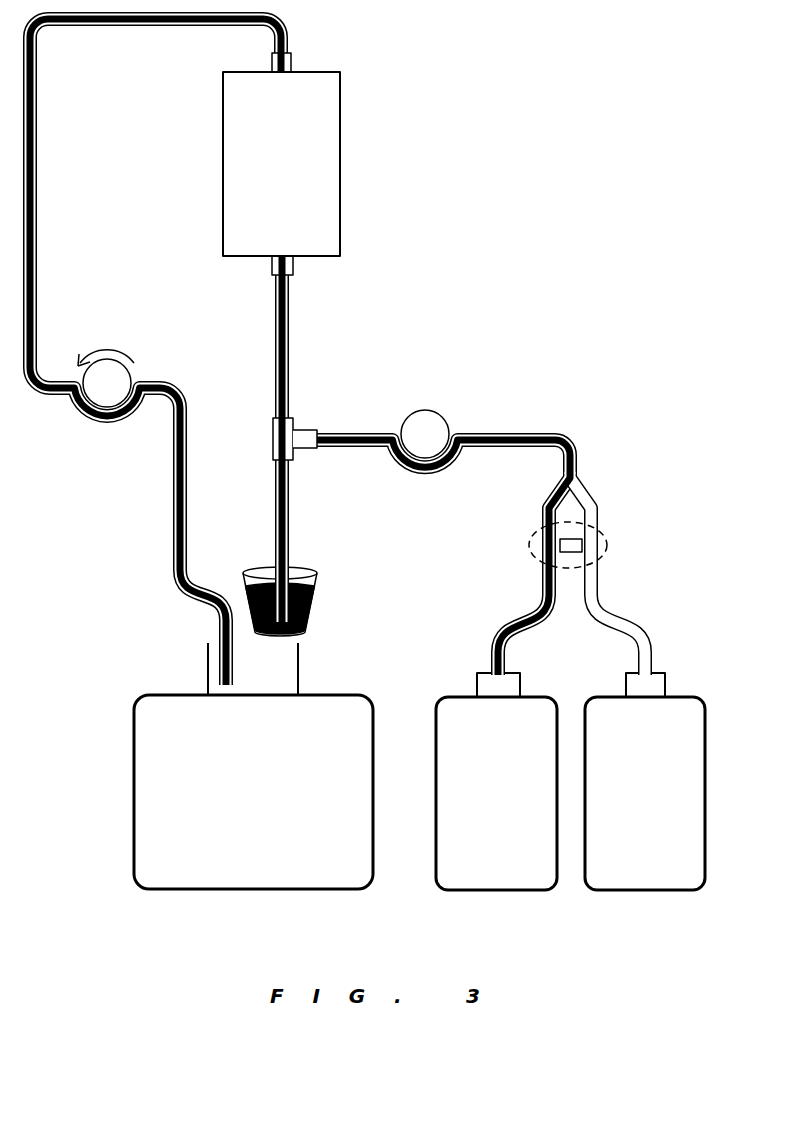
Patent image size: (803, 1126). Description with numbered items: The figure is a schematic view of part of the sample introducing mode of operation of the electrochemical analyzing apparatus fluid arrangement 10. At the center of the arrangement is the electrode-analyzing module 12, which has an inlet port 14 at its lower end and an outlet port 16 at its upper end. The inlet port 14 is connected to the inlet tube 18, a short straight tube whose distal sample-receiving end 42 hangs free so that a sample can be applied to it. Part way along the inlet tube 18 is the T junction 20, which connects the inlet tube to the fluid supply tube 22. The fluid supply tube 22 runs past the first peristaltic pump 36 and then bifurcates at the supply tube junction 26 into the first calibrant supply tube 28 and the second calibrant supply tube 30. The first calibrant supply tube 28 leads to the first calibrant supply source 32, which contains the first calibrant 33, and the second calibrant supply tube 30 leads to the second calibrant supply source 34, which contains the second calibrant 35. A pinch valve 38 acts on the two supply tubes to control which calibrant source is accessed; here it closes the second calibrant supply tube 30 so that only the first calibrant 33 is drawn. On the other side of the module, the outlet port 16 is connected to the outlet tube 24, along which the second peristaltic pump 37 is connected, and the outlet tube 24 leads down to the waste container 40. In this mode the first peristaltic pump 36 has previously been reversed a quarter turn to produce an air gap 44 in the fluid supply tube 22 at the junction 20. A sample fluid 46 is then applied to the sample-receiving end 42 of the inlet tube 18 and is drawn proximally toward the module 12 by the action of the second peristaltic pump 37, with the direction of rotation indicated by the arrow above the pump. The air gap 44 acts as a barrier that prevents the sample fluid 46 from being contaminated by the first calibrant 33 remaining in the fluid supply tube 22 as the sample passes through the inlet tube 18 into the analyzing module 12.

The electrochemical analyzing apparatus fluid arrangement 10 is at (508, 153).
The electrode-analyzing module 12 is at (294, 175).
The inlet port 14 is at (293, 268).
The outlet port 16 is at (291, 62).
The inlet tube 18 is at (274, 372).
The T junction 20 is at (280, 453).
The fluid supply tube 22 is at (333, 433).
The outlet tube 24 is at (37, 222).
The supply tube junction 26 is at (578, 472).
The first calibrant supply tube 28 is at (543, 502).
The second calibrant supply tube 30 is at (598, 500).
The first calibrant supply source 32 is at (436, 810).
The first calibrant 33 is at (460, 757).
The second calibrant supply source 34 is at (703, 815).
The second calibrant 35 is at (690, 763).
The first peristaltic pump 36 is at (436, 446).
The second peristaltic pump 37 is at (118, 395).
The pinch valve 38 is at (608, 545).
The waste container 40 is at (134, 795).
The sample-receiving end 42 is at (307, 625).
The air gap 44 is at (310, 448).
The sample fluid 46 is at (37, 280).